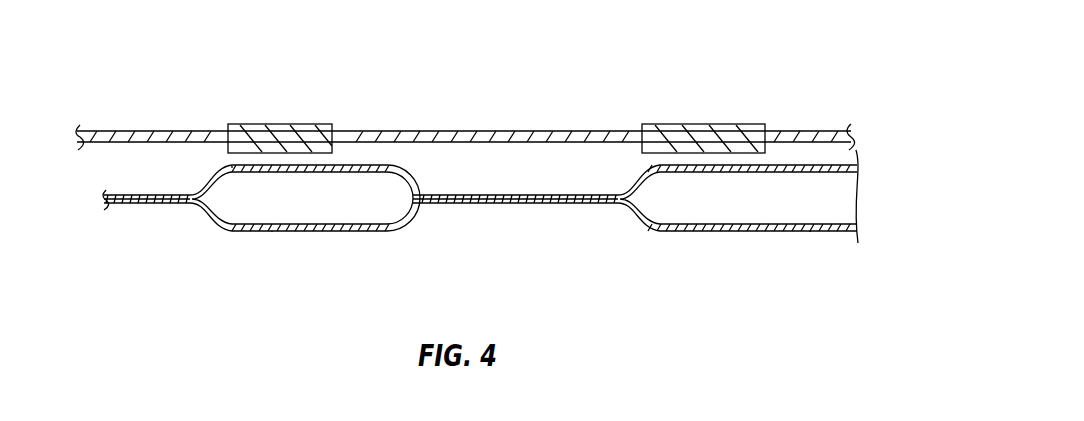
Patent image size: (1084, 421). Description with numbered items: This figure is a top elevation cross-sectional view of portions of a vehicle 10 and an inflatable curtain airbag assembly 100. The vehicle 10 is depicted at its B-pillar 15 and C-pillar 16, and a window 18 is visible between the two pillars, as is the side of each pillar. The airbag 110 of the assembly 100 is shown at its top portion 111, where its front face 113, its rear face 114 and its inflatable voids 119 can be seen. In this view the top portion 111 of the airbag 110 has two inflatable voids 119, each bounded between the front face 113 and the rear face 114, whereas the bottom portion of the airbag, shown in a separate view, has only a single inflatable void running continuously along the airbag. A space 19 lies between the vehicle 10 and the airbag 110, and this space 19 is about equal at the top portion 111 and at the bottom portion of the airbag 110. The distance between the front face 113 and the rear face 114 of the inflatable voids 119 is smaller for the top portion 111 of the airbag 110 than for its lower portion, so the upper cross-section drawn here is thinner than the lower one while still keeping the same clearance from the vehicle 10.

The vehicle 10 is at (405, 101).
The B-pillar 15 is at (707, 130).
The C-pillar 16 is at (290, 134).
The window 18 is at (142, 128).
The space 19 is at (221, 160).
The assembly 100 is at (510, 221).
The airbag 110 is at (455, 205).
The top portion 111 is at (123, 207).
The front face 113 is at (232, 168).
The rear face 114 is at (272, 232).
The inflatable void 119 is at (320, 209).